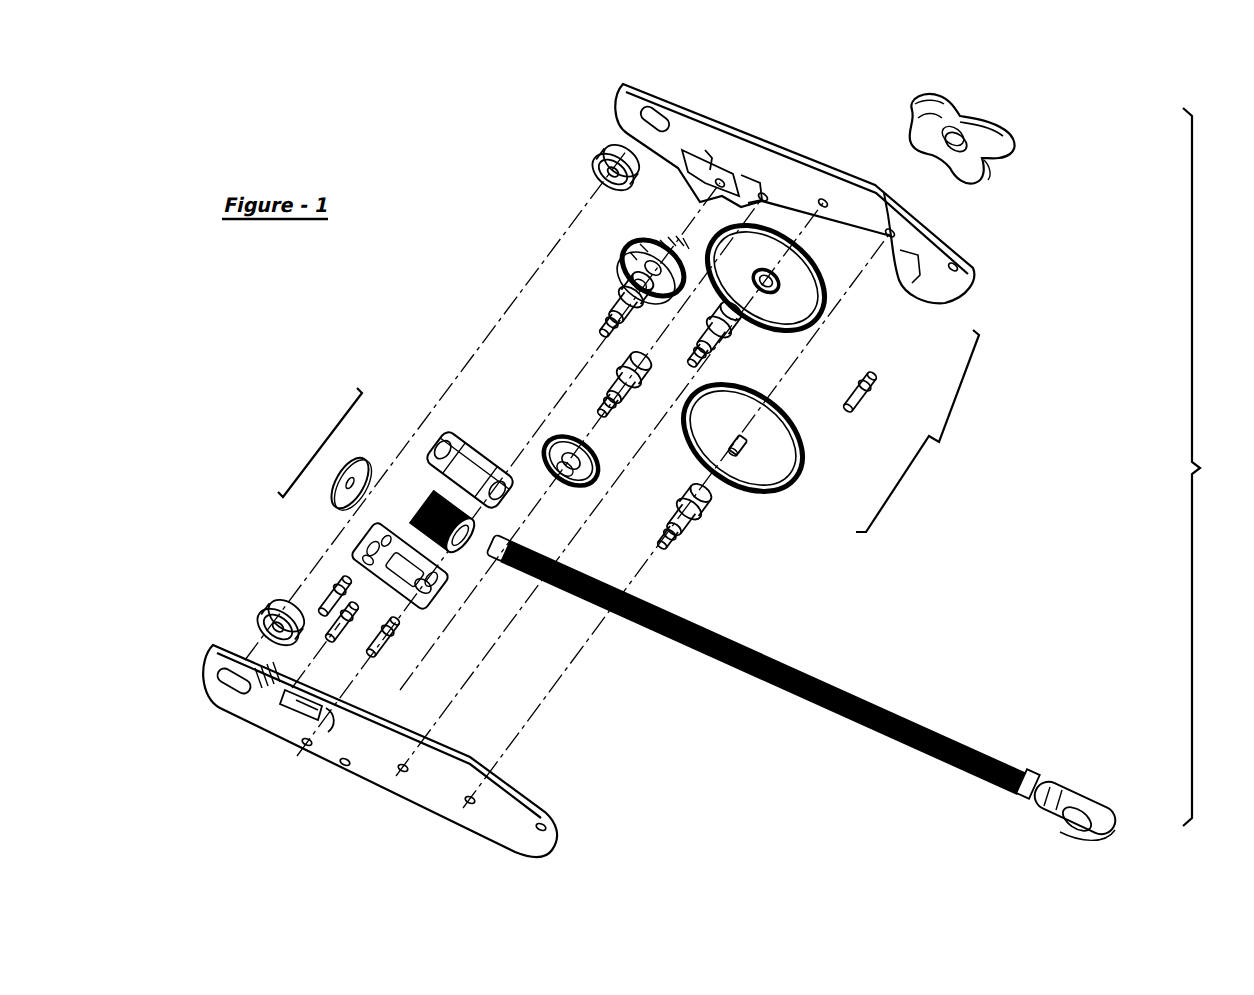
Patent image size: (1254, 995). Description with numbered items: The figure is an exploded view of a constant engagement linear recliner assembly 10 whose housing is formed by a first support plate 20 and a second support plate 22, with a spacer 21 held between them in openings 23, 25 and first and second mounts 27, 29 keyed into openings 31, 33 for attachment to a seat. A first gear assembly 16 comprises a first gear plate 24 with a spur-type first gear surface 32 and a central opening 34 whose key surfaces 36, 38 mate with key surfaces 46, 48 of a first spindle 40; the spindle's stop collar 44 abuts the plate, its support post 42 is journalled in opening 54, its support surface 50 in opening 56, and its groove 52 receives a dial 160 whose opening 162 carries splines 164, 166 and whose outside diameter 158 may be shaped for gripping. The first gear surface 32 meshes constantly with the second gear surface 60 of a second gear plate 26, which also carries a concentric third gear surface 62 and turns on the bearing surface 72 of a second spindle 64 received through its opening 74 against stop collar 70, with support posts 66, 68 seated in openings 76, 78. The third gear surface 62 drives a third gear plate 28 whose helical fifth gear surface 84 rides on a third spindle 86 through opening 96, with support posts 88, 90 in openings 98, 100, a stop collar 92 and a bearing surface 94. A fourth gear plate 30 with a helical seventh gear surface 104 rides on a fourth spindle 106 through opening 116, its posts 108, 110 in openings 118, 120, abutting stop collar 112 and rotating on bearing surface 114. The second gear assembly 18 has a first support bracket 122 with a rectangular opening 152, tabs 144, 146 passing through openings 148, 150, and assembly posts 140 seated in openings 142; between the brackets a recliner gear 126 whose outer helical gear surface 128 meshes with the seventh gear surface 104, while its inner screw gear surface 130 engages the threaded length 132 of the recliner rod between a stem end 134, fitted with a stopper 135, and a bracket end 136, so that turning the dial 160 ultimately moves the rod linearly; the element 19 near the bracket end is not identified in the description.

The constant engagement linear recliner assembly 10 is at (1208, 467).
The first gear assembly 16 is at (917, 431).
The second gear assembly 18 is at (320, 442).
The cable end fitting 19 is at (1036, 778).
The first support plate 20 is at (937, 243).
The spacer 21 is at (878, 401).
The second support plate 22 is at (507, 828).
The opening 23 is at (957, 270).
The first gear plate 24 is at (777, 470).
The opening 25 is at (541, 826).
The second gear plate 26 is at (787, 306).
The first mount 27 is at (594, 165).
The third gear plate 28 is at (585, 483).
The second mount 29 is at (280, 611).
The fourth gear plate 30 is at (667, 287).
The opening 31 is at (646, 118).
The first gear surface 32 is at (790, 433).
The opening 33 is at (227, 674).
The centrally disposed opening 34 is at (757, 467).
The first key surface 36 is at (730, 430).
The second key surface 38 is at (730, 447).
The first spindle 40 is at (693, 530).
The support post 42 is at (670, 537).
The stop collar 44 is at (667, 523).
The first key surface 46 is at (680, 507).
The second key surface 48 is at (697, 533).
The support surface 50 is at (697, 497).
The groove 52 is at (700, 480).
The opening 54 is at (470, 802).
The opening 56 is at (890, 233).
The second gear surface 60 is at (757, 296).
The third gear surface 62 is at (803, 270).
The second spindle 64 is at (720, 325).
The first support post 66 is at (737, 320).
The second support post 68 is at (703, 359).
The stop collar 70 is at (713, 338).
The bearing surface 72 is at (733, 337).
The centrally disposed opening 74 is at (758, 281).
The opening 76 is at (823, 203).
The opening 78 is at (401, 775).
The fifth gear surface 84 is at (600, 455).
The third spindle 86 is at (612, 383).
The first support post 88 is at (640, 373).
The second support post 90 is at (607, 402).
The stop collar 92 is at (633, 380).
The bearing surface 94 is at (622, 398).
The opening 96 is at (567, 468).
The opening 98 is at (766, 197).
The opening 100 is at (344, 768).
The seventh gear surface 104 is at (646, 250).
The fourth spindle 106 is at (621, 301).
The first support post 108 is at (627, 276).
The second support post 110 is at (613, 323).
The stop collar 112 is at (617, 317).
The bearing surface 114 is at (633, 303).
The opening 116 is at (657, 252).
The opening 118 is at (717, 183).
The opening 120 is at (306, 748).
The first support bracket 122 is at (457, 444).
The recliner gear 126 is at (427, 504).
The outer diameter gear surface 128 is at (468, 500).
The inner diameter gear surface 130 is at (460, 546).
The threaded length 132 is at (800, 672).
The stem end 134 is at (367, 548).
The stopper 135 is at (363, 457).
The bracket end 136 is at (1095, 810).
The assembly posts 140 is at (343, 580).
The openings 142 is at (708, 146).
The first tab 144 is at (503, 486).
The second tab 146 is at (363, 557).
The opening 148 is at (266, 808).
The opening 150 is at (676, 113).
The rectangular opening 152 is at (470, 457).
The outside diameter 158 is at (1004, 173).
The dial 160 is at (937, 135).
The centrally disposed opening 162 is at (983, 177).
The first spline 164 is at (950, 147).
The second spline 166 is at (997, 142).